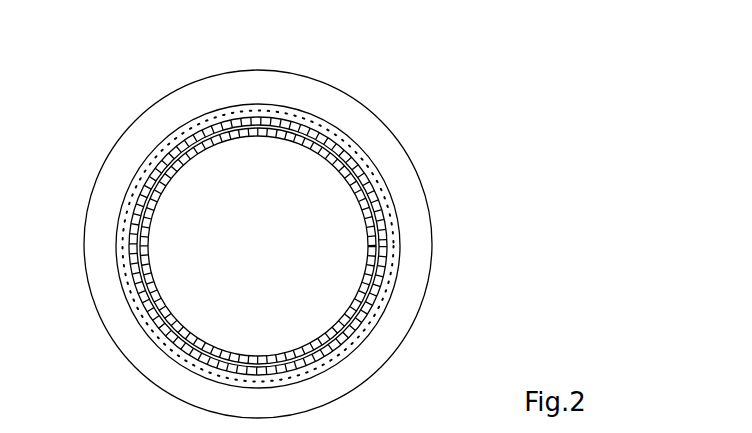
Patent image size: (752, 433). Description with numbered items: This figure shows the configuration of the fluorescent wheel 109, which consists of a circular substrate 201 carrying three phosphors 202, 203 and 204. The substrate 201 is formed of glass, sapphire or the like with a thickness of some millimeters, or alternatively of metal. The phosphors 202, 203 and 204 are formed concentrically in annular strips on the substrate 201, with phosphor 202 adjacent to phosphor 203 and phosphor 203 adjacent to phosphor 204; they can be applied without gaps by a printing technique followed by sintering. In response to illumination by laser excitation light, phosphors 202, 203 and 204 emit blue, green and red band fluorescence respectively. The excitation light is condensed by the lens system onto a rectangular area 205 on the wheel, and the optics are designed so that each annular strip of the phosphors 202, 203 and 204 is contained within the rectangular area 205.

The fluorescent wheel 109 is at (342, 57).
The circular substrate 201 is at (430, 285).
The phosphor 202 is at (148, 245).
The phosphor 203 is at (163, 187).
The phosphor 204 is at (122, 214).
The rectangular area 205 is at (259, 105).